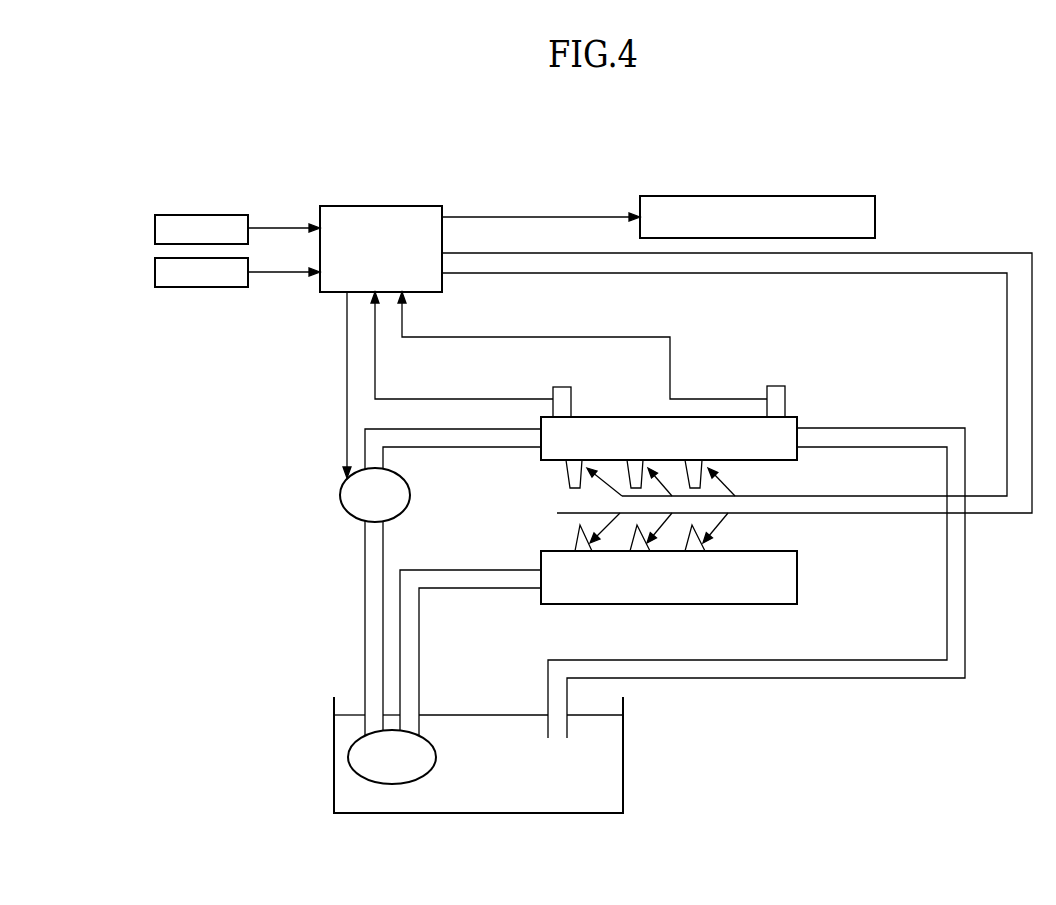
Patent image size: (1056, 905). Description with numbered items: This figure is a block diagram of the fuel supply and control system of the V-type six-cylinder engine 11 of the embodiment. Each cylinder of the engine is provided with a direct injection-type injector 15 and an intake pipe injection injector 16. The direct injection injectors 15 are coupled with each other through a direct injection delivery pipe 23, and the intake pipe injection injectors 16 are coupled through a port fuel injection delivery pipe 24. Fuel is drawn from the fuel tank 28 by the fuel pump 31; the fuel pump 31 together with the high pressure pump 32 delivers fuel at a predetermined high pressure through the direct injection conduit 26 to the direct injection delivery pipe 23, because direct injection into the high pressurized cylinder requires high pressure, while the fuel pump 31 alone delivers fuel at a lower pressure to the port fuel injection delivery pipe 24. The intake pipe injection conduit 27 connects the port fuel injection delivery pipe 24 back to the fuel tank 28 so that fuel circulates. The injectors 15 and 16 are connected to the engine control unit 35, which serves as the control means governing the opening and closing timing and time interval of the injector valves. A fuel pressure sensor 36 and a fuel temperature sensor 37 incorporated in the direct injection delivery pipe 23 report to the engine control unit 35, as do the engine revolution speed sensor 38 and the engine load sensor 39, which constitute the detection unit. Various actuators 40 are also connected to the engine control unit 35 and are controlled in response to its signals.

The V-type 6-cylinder engine 11 is at (722, 160).
The direct injection-type injector 15 is at (688, 489).
The intake pipe injection injector 16 is at (690, 529).
The direct injection delivery pipe 23 is at (798, 416).
The port fuel injection delivery pipe 24 is at (797, 580).
The direct injection conduit 26 is at (372, 588).
The intake pipe injection conduit 27 is at (413, 672).
The fuel tank 28 is at (578, 787).
The fuel pump 31 is at (416, 783).
The high pressure pump 32 is at (340, 500).
The engine control unit 35 is at (420, 206).
The fuel pressure sensor 36 is at (571, 393).
The fuel temperature sensor 37 is at (777, 386).
The engine revolution speed sensor 38 is at (218, 215).
The engine load sensor 39 is at (218, 287).
The actuators 40 is at (875, 217).